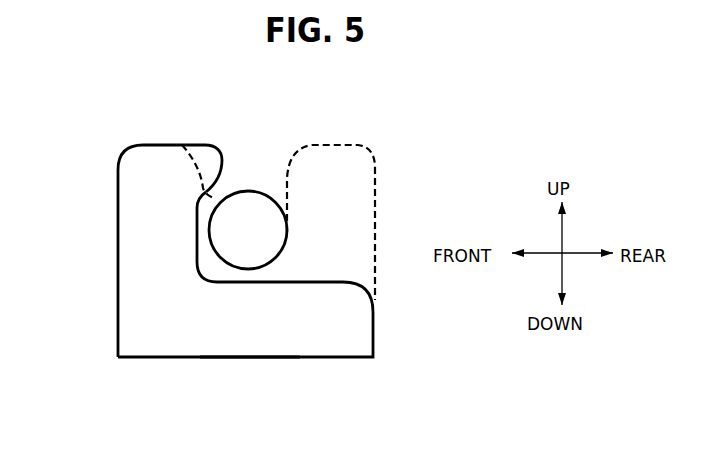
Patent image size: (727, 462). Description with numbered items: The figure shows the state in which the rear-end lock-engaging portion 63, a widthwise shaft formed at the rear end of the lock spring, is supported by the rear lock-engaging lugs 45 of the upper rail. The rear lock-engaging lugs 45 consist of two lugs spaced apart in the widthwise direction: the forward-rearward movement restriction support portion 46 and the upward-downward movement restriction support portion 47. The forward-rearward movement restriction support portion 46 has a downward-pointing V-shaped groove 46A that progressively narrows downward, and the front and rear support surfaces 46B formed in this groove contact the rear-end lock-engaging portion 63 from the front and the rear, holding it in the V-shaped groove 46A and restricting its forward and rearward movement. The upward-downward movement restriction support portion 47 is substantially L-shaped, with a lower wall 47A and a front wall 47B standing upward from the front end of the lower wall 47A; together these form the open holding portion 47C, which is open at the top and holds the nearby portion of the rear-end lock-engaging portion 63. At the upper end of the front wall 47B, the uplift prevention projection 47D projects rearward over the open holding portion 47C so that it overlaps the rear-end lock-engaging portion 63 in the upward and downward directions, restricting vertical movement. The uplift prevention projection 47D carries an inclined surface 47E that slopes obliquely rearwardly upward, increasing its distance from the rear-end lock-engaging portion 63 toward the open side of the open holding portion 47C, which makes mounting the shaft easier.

The rear lock-engaging lugs 45 is at (430, 270).
The forward-rearward movement restriction support portion 46 is at (357, 274).
The V-shaped groove 46A is at (260, 176).
The front and rear support surfaces 46B is at (215, 197).
The upward-downward movement restriction support portion 47 is at (357, 321).
The lower wall 47A is at (312, 345).
The front wall 47B is at (130, 232).
The open holding portion 47C is at (260, 176).
The uplift prevention projection 47D is at (214, 158).
The inclined surface 47E is at (212, 190).
The rear-end lock-engaging portion 63 is at (263, 230).